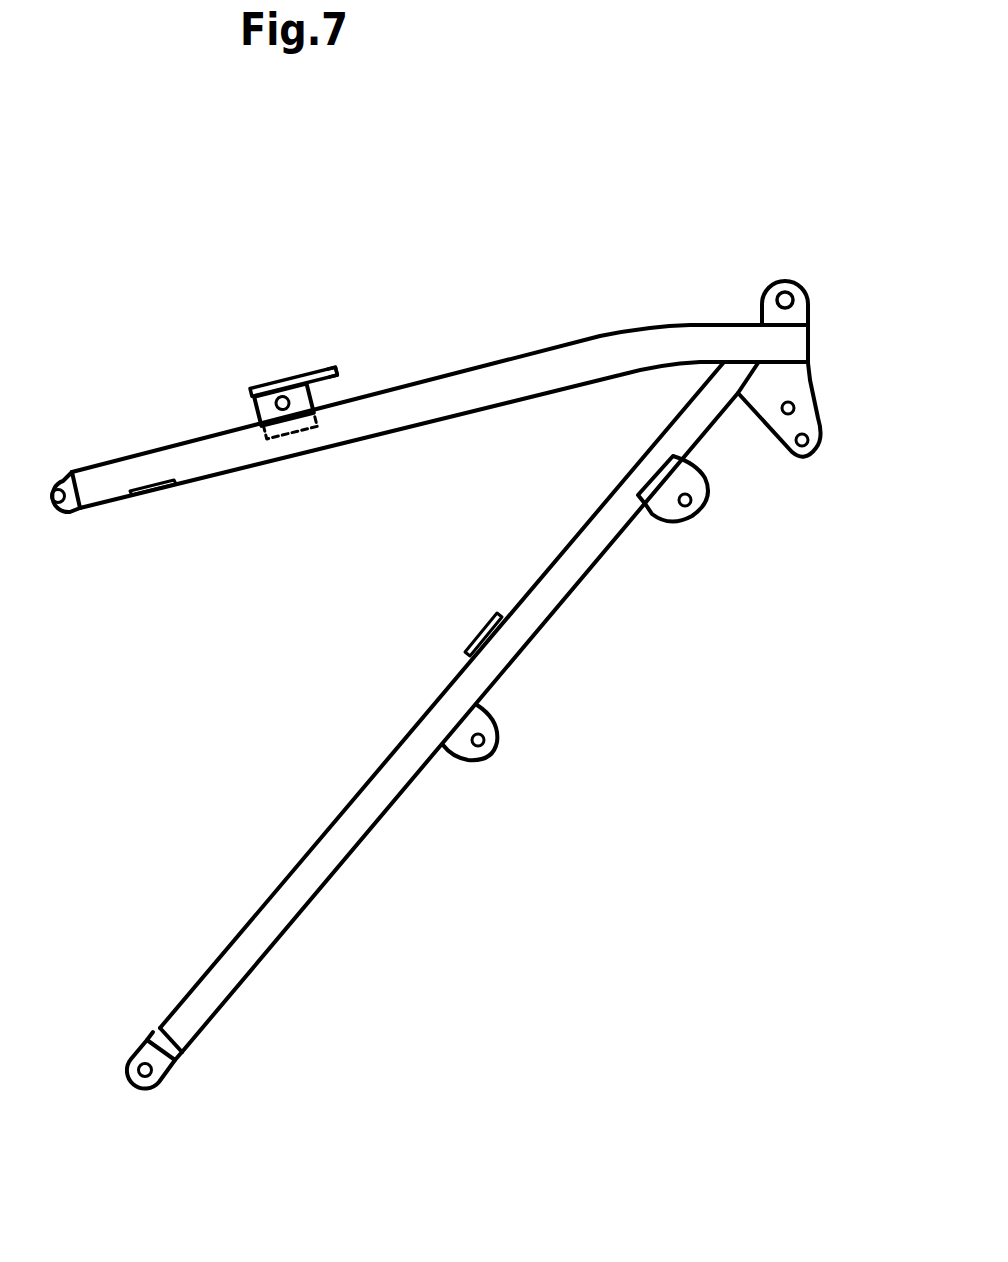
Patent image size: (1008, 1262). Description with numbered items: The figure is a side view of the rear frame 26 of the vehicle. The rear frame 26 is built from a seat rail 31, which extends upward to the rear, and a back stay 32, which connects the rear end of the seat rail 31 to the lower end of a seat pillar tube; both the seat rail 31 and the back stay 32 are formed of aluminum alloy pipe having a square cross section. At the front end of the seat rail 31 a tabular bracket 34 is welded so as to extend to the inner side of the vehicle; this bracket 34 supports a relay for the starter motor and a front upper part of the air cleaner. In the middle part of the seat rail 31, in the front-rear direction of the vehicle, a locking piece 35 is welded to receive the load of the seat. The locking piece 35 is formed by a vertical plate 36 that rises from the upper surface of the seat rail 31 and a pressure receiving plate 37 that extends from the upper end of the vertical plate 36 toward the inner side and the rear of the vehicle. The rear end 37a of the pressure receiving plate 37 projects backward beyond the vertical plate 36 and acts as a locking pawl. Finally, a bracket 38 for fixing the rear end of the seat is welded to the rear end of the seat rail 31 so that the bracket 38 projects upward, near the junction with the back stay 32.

The rear frame 26 is at (470, 674).
The seat rail 31 is at (558, 347).
The back stay 32 is at (343, 862).
The tabular bracket 34 is at (157, 497).
The locking piece 35 is at (303, 362).
The vertical plate 36 is at (263, 408).
The pressure receiving plate 37 is at (303, 377).
The rear end 37a is at (337, 371).
The bracket 38 is at (810, 310).